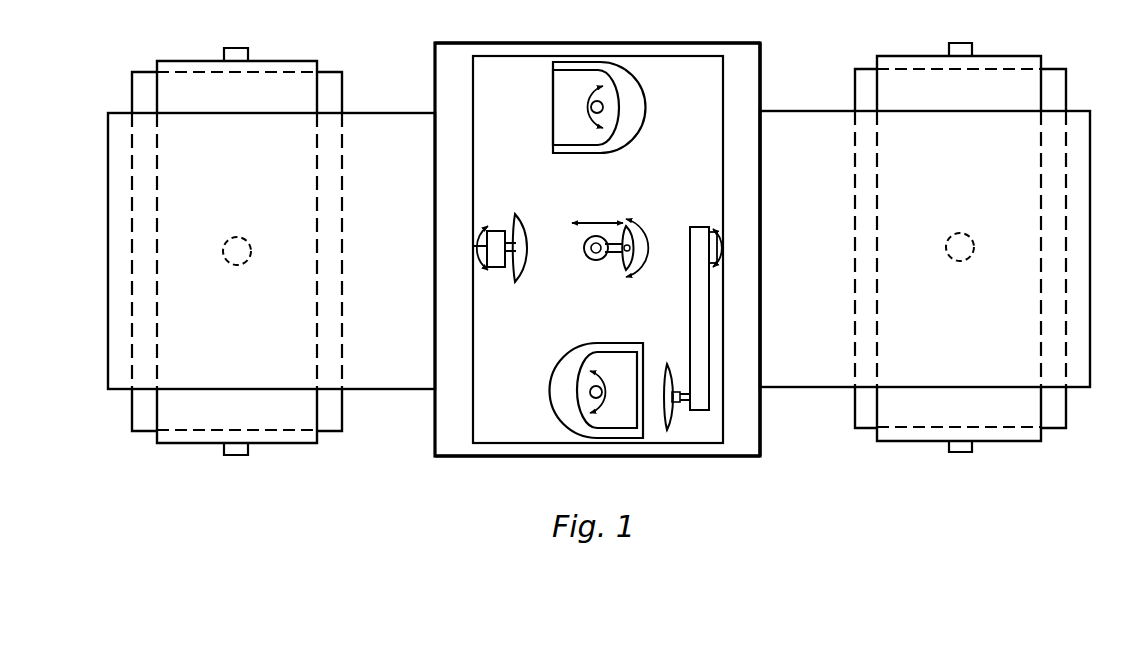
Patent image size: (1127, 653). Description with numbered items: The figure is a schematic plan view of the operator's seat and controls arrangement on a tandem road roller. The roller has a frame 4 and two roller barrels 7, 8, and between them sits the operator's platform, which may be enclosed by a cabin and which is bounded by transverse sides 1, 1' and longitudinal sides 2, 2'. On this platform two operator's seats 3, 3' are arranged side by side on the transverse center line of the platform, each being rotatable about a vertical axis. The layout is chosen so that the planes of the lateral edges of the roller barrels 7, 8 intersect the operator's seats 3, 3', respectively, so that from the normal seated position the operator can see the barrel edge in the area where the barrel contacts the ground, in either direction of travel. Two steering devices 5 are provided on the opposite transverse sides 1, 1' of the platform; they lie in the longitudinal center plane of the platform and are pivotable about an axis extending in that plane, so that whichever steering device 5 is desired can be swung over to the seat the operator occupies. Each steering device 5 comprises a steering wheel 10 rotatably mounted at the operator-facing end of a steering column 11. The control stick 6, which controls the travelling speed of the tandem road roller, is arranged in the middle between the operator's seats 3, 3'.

The transverse side 1 is at (594, 233).
The transverse side 1' is at (752, 232).
The longitudinal side 2 is at (597, 29).
The longitudinal side 2' is at (597, 468).
The operator's seat 3 is at (582, 107).
The operator's seat 3' is at (579, 390).
The frame 4 is at (599, 250).
The steering device 5 is at (501, 222).
The control stick 6 is at (597, 264).
The roller barrel 7 is at (147, 81).
The roller barrel 8 is at (1050, 75).
The steering wheel 10 is at (667, 365).
The steering column 11 is at (690, 272).